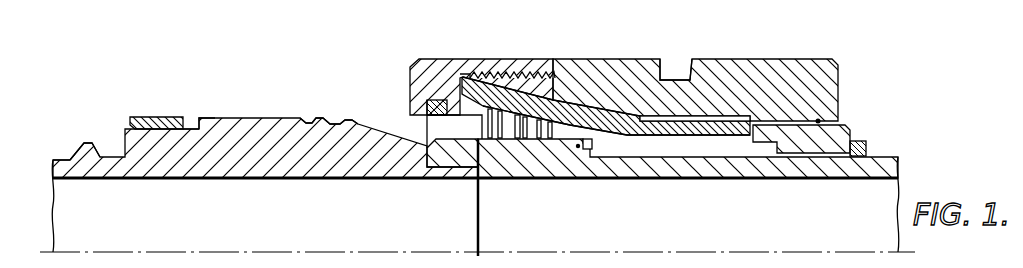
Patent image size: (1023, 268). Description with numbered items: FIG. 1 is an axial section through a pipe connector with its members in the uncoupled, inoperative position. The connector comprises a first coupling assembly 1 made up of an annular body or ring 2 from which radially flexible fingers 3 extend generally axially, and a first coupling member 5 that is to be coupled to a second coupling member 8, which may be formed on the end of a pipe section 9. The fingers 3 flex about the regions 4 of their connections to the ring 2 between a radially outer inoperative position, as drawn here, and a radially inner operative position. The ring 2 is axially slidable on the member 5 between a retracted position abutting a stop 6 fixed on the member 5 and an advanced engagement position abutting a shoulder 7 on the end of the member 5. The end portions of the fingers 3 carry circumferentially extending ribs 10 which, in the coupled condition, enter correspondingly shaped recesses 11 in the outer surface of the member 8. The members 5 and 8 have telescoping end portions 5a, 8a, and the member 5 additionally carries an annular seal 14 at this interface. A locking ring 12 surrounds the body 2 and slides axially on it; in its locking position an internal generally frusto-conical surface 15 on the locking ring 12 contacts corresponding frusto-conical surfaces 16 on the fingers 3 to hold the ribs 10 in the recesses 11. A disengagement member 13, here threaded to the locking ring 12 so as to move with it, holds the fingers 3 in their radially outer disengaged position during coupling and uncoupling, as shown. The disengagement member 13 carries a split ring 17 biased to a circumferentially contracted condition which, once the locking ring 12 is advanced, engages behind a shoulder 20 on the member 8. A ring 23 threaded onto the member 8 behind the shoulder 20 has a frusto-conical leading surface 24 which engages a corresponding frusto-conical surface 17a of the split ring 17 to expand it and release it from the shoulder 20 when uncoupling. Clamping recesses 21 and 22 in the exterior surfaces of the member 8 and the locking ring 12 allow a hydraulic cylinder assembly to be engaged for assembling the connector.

The first coupling assembly 1 is at (895, 110).
The annular body or ring 2 is at (828, 143).
The radially flexible fingers 3 is at (600, 127).
The regions of connection 4 is at (735, 130).
The first coupling member 5 is at (673, 167).
The telescoping end portion 5a is at (433, 152).
The stop 6 is at (867, 145).
The shoulder 7 is at (595, 153).
The second coupling member 8 is at (278, 142).
The telescoping end portion 8a is at (458, 168).
The pipe section 9 is at (71, 165).
The ribs 10 is at (532, 143).
The recesses 11 is at (332, 125).
The locking ring 12 is at (800, 72).
The disengagement means 13 is at (450, 76).
The annular seal 14 is at (480, 168).
The internal frusto-conical surface 15 is at (628, 117).
The frusto-conical surfaces 16 is at (510, 97).
The split ring 17 is at (435, 100).
The frusto-conical surface 17a is at (437, 117).
The shoulder 20 is at (200, 118).
The clamping recess 21 is at (100, 152).
The clamping recess 22 is at (687, 70).
The ring 23 is at (138, 116).
The frusto-conical leading surface 24 is at (188, 129).